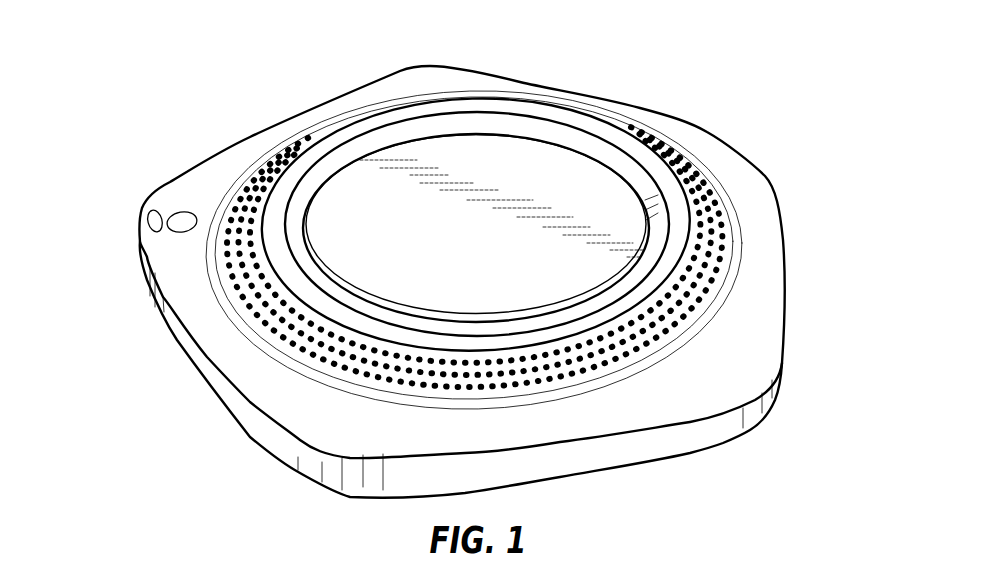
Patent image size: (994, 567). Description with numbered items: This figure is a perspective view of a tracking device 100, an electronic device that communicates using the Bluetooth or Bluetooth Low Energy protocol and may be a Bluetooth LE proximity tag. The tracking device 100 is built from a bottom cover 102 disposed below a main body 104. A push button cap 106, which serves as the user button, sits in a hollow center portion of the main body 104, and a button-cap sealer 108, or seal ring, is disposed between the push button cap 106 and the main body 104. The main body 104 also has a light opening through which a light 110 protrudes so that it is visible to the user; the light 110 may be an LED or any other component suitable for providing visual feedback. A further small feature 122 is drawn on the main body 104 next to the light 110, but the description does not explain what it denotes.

The tracking device 100 is at (745, 70).
The bottom cover 102 is at (677, 457).
The main body 104 is at (762, 283).
The push button cap 106 is at (333, 210).
The button-cap sealer 108 is at (337, 160).
The light 110 is at (178, 227).
The indicator light 122 is at (147, 211).